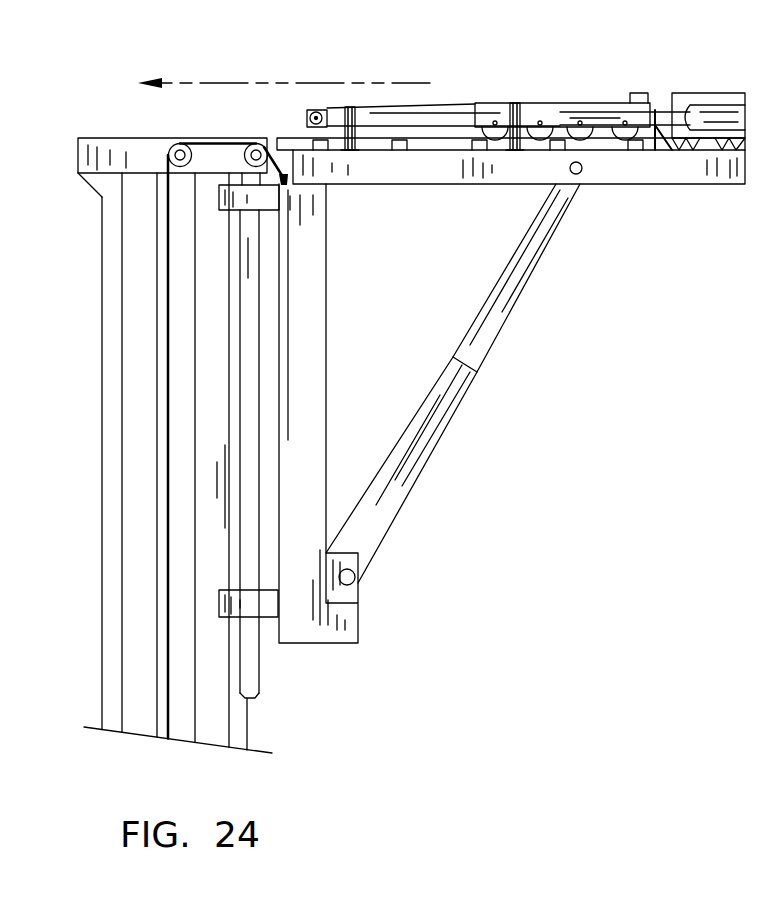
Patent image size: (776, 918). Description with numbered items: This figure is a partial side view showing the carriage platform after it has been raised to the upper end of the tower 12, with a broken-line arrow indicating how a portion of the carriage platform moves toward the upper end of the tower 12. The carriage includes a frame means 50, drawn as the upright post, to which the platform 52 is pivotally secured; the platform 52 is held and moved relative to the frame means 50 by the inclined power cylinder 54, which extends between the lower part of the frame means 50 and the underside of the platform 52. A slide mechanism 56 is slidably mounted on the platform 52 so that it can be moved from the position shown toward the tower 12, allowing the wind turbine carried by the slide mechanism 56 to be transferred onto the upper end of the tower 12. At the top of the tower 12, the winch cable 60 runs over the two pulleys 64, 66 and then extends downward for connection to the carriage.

The tower 12 is at (100, 468).
The frame means 50 is at (300, 613).
The platform 52 is at (642, 167).
The power cylinder 54 is at (448, 412).
The slide mechanism 56 is at (565, 108).
The winch cable 60 is at (168, 268).
The pulley 64 is at (176, 142).
The pulley 66 is at (262, 142).